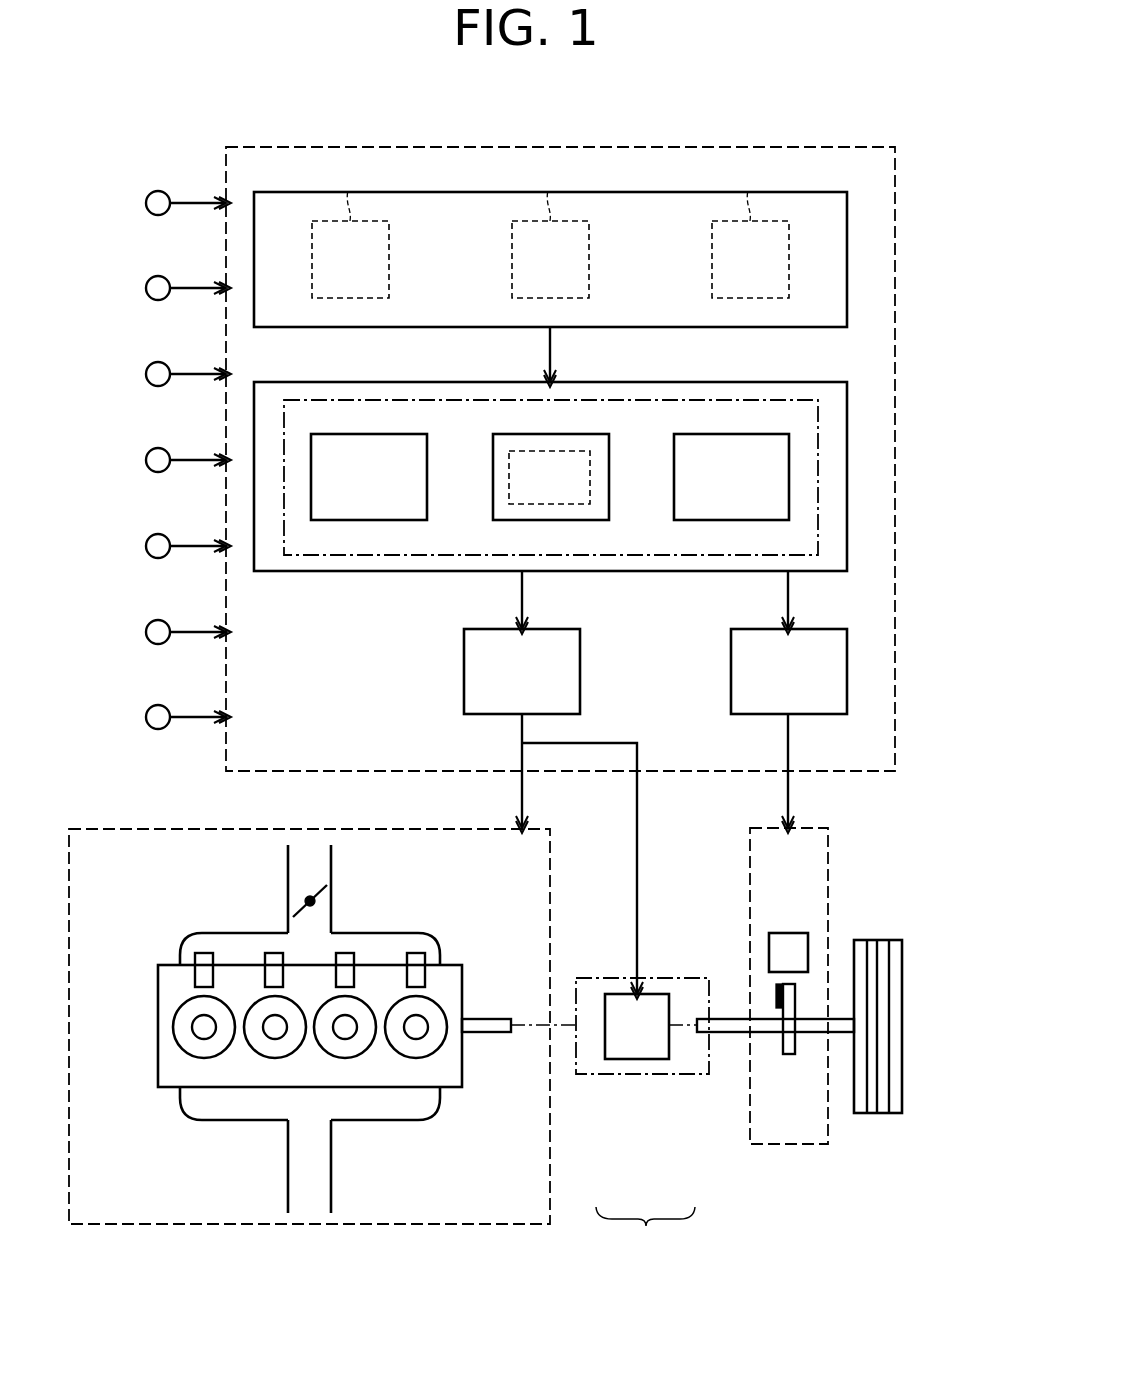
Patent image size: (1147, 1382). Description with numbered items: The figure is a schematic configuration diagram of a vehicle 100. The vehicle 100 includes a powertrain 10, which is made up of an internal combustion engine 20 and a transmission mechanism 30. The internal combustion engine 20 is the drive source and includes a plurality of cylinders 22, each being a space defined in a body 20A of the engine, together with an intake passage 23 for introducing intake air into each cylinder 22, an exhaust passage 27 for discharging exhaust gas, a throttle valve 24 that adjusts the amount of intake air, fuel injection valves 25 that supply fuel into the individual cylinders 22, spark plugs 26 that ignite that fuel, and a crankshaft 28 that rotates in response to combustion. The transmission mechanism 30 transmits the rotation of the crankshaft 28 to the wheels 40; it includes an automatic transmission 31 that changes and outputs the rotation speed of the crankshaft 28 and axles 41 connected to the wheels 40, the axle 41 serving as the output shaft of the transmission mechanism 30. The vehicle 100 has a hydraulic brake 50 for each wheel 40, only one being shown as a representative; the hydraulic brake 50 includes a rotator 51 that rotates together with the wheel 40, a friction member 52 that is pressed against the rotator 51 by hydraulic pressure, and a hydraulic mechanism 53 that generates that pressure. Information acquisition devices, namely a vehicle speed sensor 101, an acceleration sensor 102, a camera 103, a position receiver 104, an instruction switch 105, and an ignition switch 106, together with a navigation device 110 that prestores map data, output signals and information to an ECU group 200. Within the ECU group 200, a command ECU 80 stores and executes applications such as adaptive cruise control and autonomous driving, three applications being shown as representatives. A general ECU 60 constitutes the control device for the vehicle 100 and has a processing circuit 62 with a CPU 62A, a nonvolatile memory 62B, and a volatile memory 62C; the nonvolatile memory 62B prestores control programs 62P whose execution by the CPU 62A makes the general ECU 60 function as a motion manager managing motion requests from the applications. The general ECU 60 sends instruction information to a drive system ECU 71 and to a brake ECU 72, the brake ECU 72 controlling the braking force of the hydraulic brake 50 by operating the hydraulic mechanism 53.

The powertrain 10 is at (645, 1232).
The internal combustion engine 20 is at (350, 1026).
The body 20A is at (158, 1070).
The cylinders 22 is at (405, 1097).
The intake passage 23 is at (331, 872).
The throttle valve 24 is at (304, 901).
The fuel injection valves 25 is at (265, 972).
The spark plugs 26 is at (204, 1039).
The exhaust passage 27 is at (331, 1170).
The crankshaft 28 is at (485, 1032).
The transmission mechanism 30 is at (642, 1076).
The automatic transmission 31 is at (655, 994).
The wheels 40 is at (875, 940).
The axles 41 is at (727, 1032).
The hydraulic brake 50 is at (808, 970).
The rotator 51 is at (791, 1054).
The friction member 52 is at (776, 996).
The hydraulic mechanism 53 is at (791, 933).
The general ECU 60 is at (800, 382).
The processing circuit 62 is at (708, 400).
The CPU 62A is at (352, 434).
The nonvolatile memory 62B is at (533, 434).
The volatile memory 62C is at (714, 434).
The control programs 62P is at (549, 504).
The drive system ECU 71 is at (540, 629).
The brake ECU 72 is at (808, 629).
The command ECU 80 is at (800, 192).
The vehicle 100 is at (934, 908).
The vehicle speed sensor 101 is at (146, 203).
The acceleration sensor 102 is at (146, 288).
The camera 103 is at (146, 374).
The position receiver 104 is at (146, 460).
The instruction switch 105 is at (146, 546).
The ignition switch 106 is at (146, 632).
The navigation device 110 is at (146, 717).
The ECU group 200 is at (798, 147).